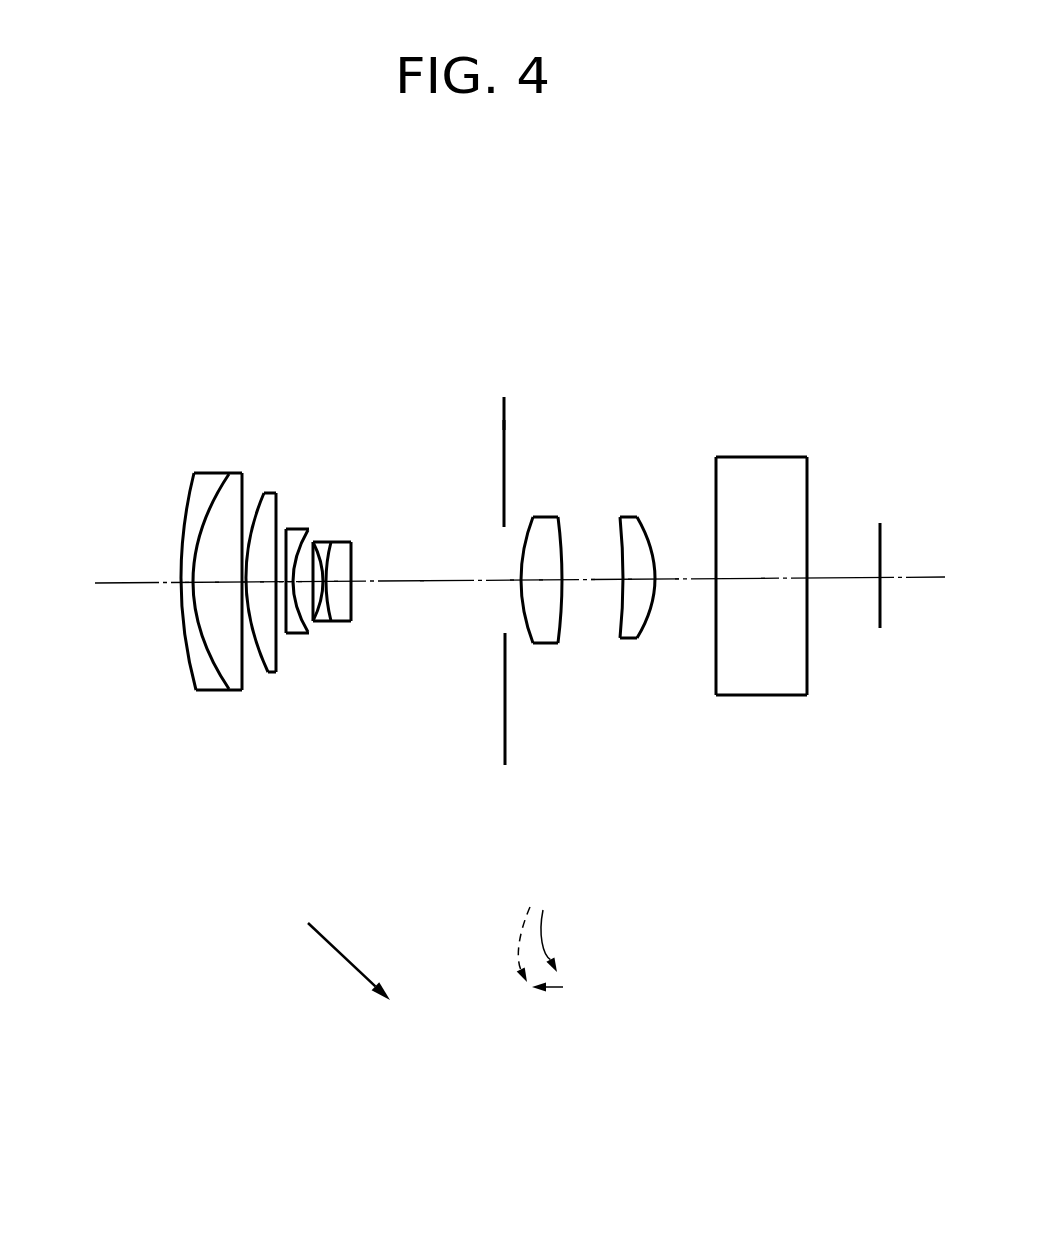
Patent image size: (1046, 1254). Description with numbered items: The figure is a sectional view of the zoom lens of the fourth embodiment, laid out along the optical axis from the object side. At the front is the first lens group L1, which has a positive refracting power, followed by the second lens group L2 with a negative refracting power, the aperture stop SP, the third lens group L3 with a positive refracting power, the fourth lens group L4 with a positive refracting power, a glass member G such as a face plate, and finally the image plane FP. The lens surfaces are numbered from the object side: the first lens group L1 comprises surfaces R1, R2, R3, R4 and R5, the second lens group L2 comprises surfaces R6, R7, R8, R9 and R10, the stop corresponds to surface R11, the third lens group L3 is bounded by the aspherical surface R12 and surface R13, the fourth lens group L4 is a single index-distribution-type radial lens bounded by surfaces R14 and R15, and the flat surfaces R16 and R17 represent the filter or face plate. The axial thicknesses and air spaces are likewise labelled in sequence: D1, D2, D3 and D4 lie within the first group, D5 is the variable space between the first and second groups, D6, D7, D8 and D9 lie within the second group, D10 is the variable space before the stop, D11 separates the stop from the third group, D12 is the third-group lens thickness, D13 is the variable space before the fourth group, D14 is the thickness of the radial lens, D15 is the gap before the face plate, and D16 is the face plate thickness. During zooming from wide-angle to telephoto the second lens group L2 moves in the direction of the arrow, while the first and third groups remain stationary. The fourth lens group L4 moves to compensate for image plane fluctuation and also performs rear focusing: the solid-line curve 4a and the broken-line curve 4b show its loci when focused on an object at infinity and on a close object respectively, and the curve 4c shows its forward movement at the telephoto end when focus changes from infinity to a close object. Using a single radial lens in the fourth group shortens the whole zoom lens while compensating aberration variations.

The first lens group L1 is at (293, 270).
The second lens group L2 is at (449, 270).
The third lens group L3 is at (587, 265).
The fourth lens group L4 is at (689, 265).
The glass member G is at (845, 263).
The aperture stop SP is at (480, 535).
The image plane FP is at (879, 547).
The first lens surface R1 is at (192, 487).
The second lens surface R2 is at (213, 483).
The third lens surface R3 is at (244, 474).
The fourth lens surface R4 is at (265, 492).
The fifth lens surface R5 is at (277, 493).
The sixth lens surface R6 is at (285, 528).
The seventh lens surface R7 is at (308, 535).
The eighth lens surface R8 is at (316, 542).
The ninth lens surface R9 is at (331, 542).
The tenth lens surface R10 is at (353, 550).
The eleventh surface (stop) R11 is at (503, 425).
The twelfth lens surface R12 is at (523, 531).
The thirteenth lens surface R13 is at (563, 520).
The fourteenth lens surface R14 is at (619, 537).
The fifteenth lens surface R15 is at (647, 527).
The sixteenth surface R16 is at (719, 483).
The seventeenth surface R17 is at (806, 470).
The first lens thickness D1 is at (187, 588).
The second lens thickness D2 is at (217, 588).
The third air space D3 is at (244, 592).
The fourth lens thickness D4 is at (262, 592).
The fifth air space D5 is at (281, 592).
The sixth lens thickness D6 is at (289, 592).
The seventh air space D7 is at (300, 592).
The eighth lens thickness D8 is at (324, 592).
The ninth lens thickness D9 is at (336, 592).
The tenth air space D10 is at (422, 590).
The eleventh air space D11 is at (512, 592).
The twelfth lens thickness D12 is at (541, 592).
The thirteenth air space D13 is at (593, 592).
The fourteenth lens thickness D14 is at (630, 592).
The fifteenth air space D15 is at (677, 592).
The sixteenth thickness D16 is at (763, 580).
The solid-line curve 4a is at (543, 938).
The broken-line curve 4b is at (517, 940).
The curve 4c is at (563, 987).